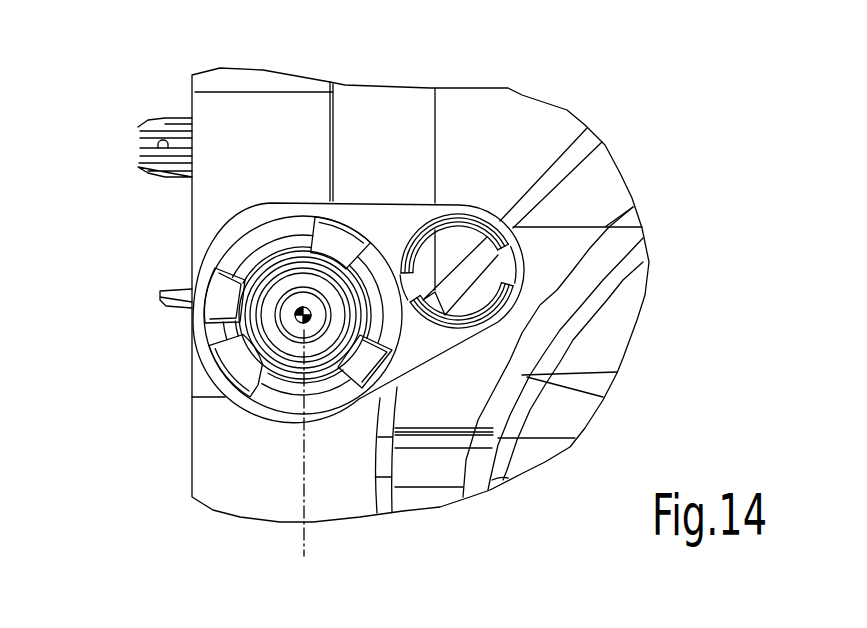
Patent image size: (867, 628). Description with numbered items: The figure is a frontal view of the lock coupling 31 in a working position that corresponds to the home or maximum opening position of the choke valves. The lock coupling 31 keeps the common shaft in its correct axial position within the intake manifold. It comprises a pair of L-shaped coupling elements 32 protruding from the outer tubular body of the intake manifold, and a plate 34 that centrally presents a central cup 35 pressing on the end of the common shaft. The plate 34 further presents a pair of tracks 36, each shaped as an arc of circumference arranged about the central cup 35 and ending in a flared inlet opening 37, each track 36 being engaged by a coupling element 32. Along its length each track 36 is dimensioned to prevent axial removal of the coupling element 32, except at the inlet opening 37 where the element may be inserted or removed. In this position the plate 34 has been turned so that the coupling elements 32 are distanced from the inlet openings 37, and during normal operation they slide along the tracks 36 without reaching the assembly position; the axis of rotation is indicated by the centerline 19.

The axis of rotation 19 is at (305, 457).
The lock coupling 31 is at (114, 478).
The coupling element 32 is at (217, 307).
The plate 34 is at (402, 212).
The central cup 35 is at (277, 287).
The track 36 is at (267, 250).
The flared inlet opening 37 is at (333, 242).